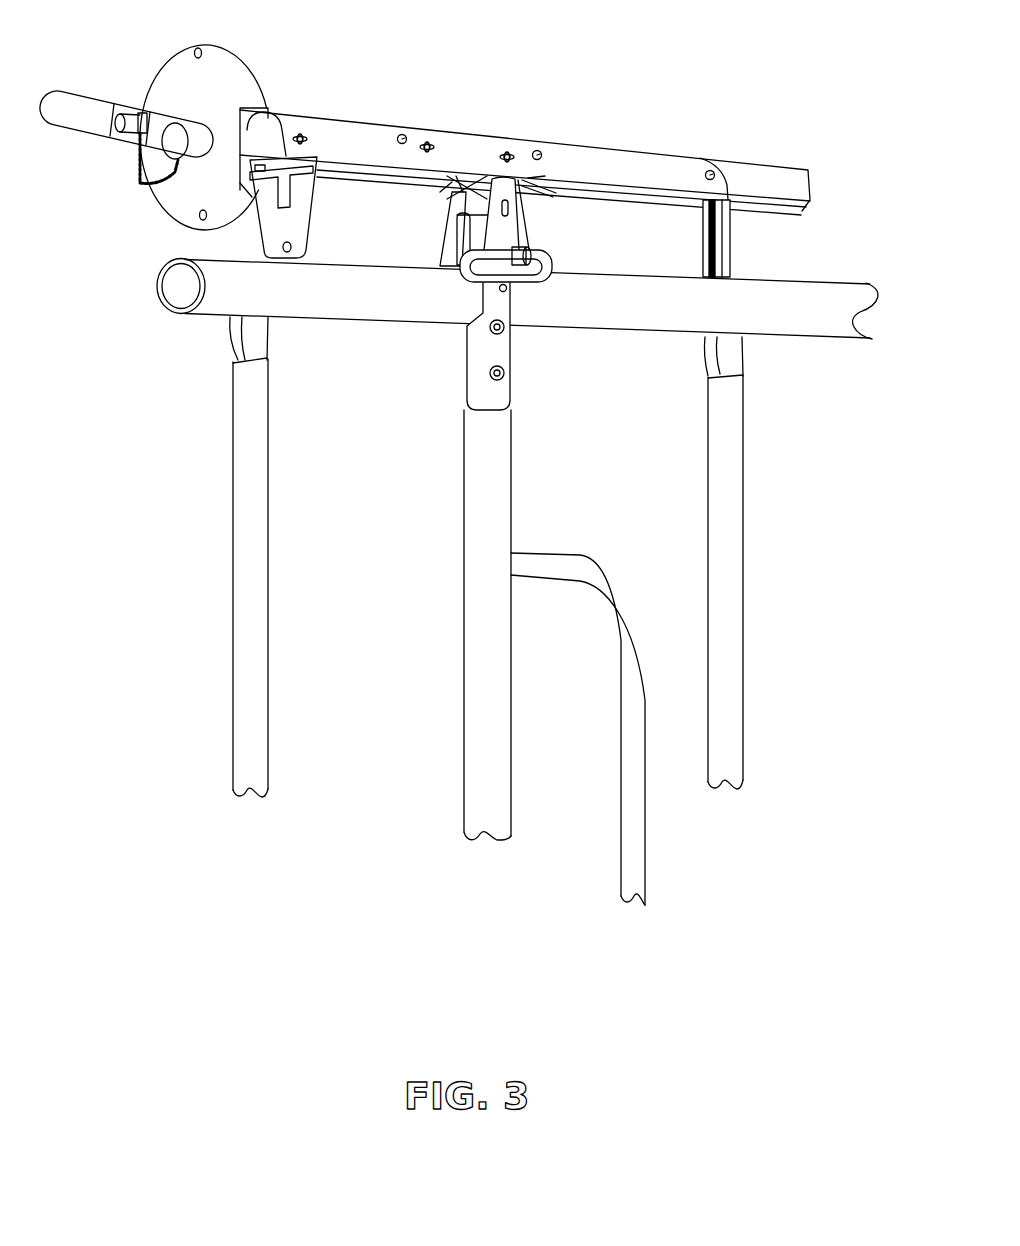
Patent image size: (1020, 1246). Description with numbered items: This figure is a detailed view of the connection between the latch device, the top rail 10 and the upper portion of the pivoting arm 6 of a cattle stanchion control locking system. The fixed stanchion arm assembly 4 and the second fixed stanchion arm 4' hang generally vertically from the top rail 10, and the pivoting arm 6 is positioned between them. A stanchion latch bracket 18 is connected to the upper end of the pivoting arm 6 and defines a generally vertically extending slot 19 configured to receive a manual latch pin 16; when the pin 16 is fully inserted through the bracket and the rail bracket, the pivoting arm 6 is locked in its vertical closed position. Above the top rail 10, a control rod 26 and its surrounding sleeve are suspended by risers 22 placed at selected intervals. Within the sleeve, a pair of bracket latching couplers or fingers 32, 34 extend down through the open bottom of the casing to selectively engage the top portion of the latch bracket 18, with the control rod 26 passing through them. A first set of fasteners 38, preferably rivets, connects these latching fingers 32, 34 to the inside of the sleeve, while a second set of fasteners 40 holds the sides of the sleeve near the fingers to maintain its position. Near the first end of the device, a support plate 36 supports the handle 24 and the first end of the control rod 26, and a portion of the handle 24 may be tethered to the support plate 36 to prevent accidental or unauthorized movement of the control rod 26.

The fixed stanchion arm assembly 4 is at (205, 557).
The second fixed stanchion arm 4' is at (695, 563).
The pivoting arm 6 is at (463, 495).
The top rail 10 is at (398, 300).
The manual latch pin 16 is at (557, 264).
The stanchion latch bracket 18 is at (518, 292).
The slot 19 is at (460, 244).
The risers 22 is at (733, 241).
The handle 24 is at (76, 118).
The control rod 26 is at (258, 145).
The bracket latching coupler 32 is at (470, 178).
The bracket latching coupler 34 is at (531, 188).
The support plate 36 is at (277, 223).
The first set of fasteners 38 is at (434, 146).
The second set of fasteners 40 is at (404, 137).